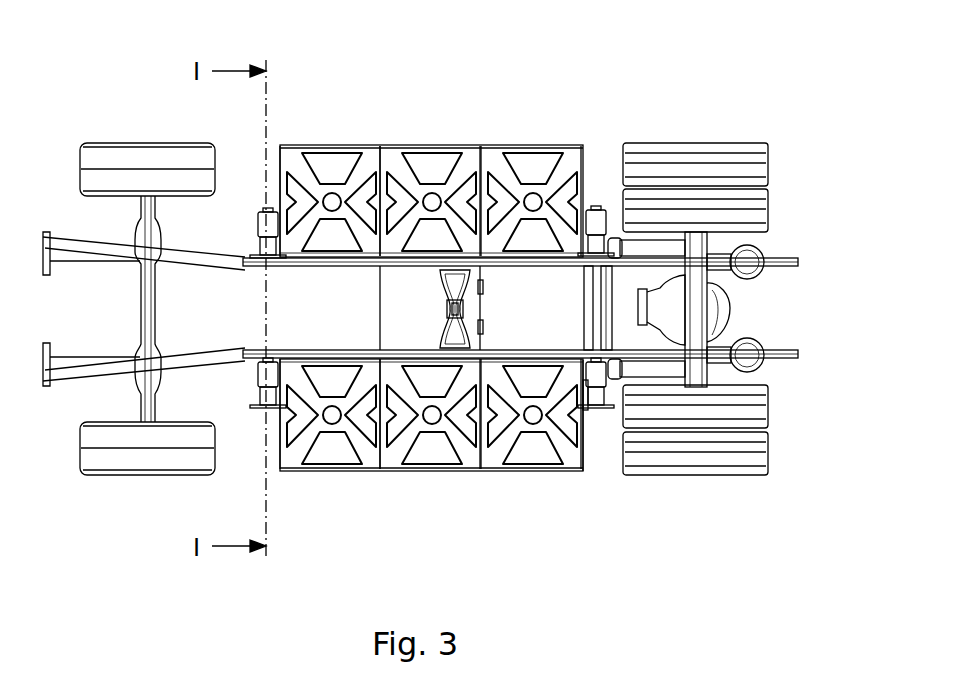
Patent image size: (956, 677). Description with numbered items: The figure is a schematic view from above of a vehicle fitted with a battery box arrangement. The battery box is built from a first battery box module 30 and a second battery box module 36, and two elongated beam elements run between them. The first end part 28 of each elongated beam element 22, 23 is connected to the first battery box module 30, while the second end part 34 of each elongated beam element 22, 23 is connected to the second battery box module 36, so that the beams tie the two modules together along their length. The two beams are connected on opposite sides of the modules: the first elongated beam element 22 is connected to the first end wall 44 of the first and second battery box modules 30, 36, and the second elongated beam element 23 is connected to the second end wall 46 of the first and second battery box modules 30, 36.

The first elongated beam element 22 is at (258, 306).
The second elongated beam element 23 is at (600, 303).
The first end part 28 is at (265, 410).
The first battery box module 30 is at (466, 471).
The second end part 34 is at (253, 222).
The second battery box module 36 is at (434, 146).
The first end wall 44 is at (272, 151).
The second end wall 46 is at (590, 447).